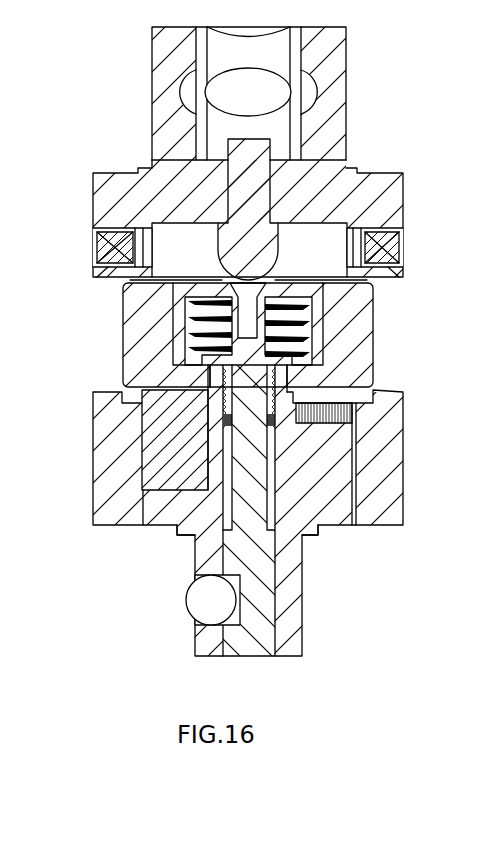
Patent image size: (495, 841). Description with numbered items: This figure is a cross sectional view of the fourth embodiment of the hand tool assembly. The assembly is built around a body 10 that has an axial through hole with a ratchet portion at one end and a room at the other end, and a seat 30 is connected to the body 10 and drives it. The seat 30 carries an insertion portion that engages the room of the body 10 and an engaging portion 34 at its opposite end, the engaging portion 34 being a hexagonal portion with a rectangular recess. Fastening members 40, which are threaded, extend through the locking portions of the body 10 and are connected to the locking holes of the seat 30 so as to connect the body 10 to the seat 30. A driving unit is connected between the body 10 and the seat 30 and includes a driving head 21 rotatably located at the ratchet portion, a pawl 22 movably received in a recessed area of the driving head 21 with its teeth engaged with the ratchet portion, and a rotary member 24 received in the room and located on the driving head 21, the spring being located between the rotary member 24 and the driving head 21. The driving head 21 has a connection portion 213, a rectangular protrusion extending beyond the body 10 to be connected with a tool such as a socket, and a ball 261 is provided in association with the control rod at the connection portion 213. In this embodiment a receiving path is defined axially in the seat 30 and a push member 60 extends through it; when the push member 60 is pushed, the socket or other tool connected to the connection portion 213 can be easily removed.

The body 10 is at (100, 473).
The driving head 21 is at (297, 545).
The pawl 22 is at (153, 428).
The rotary member 24 is at (133, 337).
The seat 30 is at (380, 202).
The engaging portion 34 is at (163, 108).
The fastening member 40 is at (401, 243).
The push member 60 is at (238, 192).
The connection portion 213 is at (294, 608).
The ball 261 is at (197, 603).